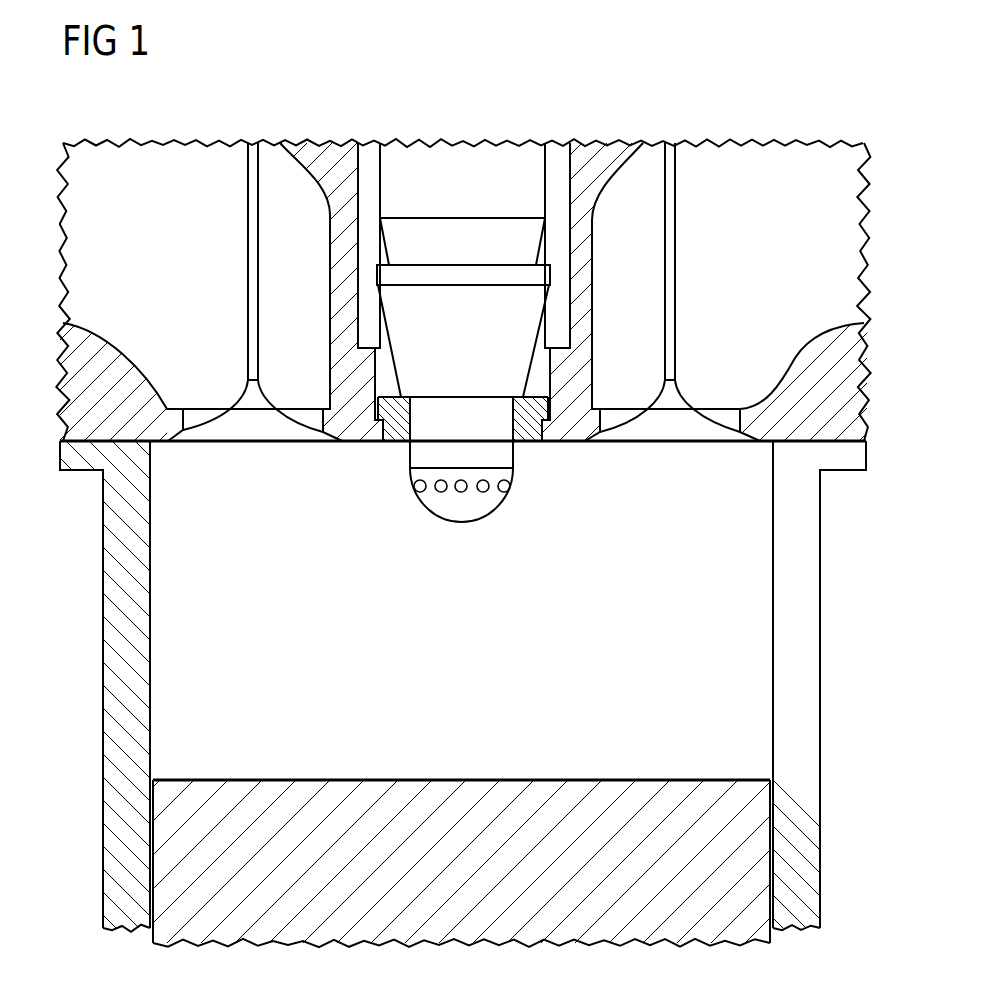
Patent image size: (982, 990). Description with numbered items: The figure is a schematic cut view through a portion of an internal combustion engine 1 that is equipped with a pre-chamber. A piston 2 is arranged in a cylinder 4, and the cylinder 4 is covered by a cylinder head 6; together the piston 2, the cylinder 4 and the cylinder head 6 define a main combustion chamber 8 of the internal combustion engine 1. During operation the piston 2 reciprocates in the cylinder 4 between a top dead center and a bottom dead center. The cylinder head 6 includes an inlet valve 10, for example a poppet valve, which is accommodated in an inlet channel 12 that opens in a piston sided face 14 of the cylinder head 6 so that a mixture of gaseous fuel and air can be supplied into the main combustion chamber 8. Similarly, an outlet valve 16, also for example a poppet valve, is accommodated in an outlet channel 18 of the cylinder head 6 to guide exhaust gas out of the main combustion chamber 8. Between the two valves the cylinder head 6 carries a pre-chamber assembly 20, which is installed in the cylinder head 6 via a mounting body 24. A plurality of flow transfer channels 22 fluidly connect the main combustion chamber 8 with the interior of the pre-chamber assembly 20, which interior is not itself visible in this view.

The internal combustion engine 1 is at (480, 93).
The piston 2 is at (612, 793).
The cylinder 4 is at (821, 670).
The cylinder head 6 is at (332, 150).
The main combustion chamber 8 is at (452, 676).
The inlet valve 10 is at (248, 431).
The inlet channel 12 is at (210, 167).
The piston sided face 14 is at (347, 452).
The outlet valve 16 is at (677, 431).
The outlet channel 18 is at (730, 153).
The pre-chamber assembly 20 is at (566, 287).
The flow transfer channels 22 is at (418, 486).
The mounting body 24 is at (532, 430).